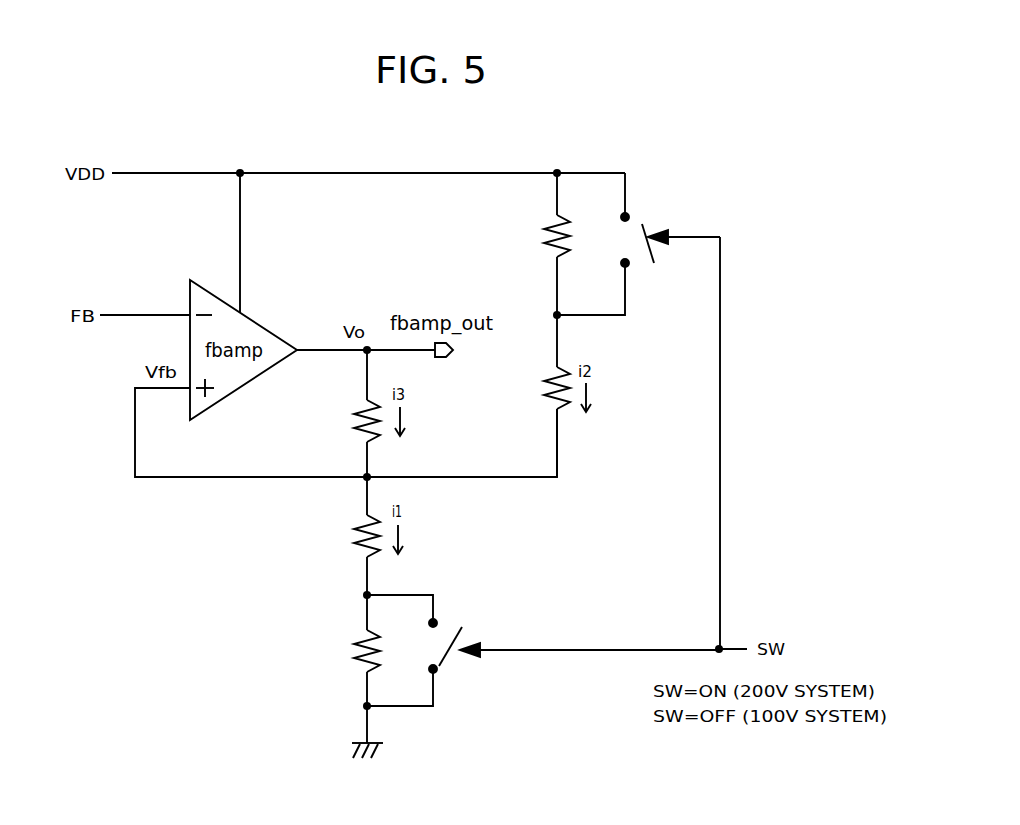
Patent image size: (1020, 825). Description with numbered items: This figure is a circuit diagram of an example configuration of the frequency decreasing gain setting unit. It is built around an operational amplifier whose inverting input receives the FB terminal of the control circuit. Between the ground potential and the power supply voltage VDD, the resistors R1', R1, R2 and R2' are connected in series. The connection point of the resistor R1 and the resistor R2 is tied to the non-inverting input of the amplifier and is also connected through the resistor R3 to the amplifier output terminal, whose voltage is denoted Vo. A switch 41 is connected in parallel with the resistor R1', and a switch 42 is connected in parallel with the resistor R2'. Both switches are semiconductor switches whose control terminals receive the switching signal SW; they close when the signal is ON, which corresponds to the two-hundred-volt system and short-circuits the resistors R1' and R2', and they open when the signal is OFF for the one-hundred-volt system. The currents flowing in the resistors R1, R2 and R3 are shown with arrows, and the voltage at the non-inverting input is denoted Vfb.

The switch 41 is at (452, 623).
The switch 42 is at (642, 225).
The resistor R1 is at (348, 536).
The resistor R1' is at (342, 650).
The resistor R2 is at (536, 396).
The resistor R2' is at (535, 244).
The resistor R3 is at (348, 413).